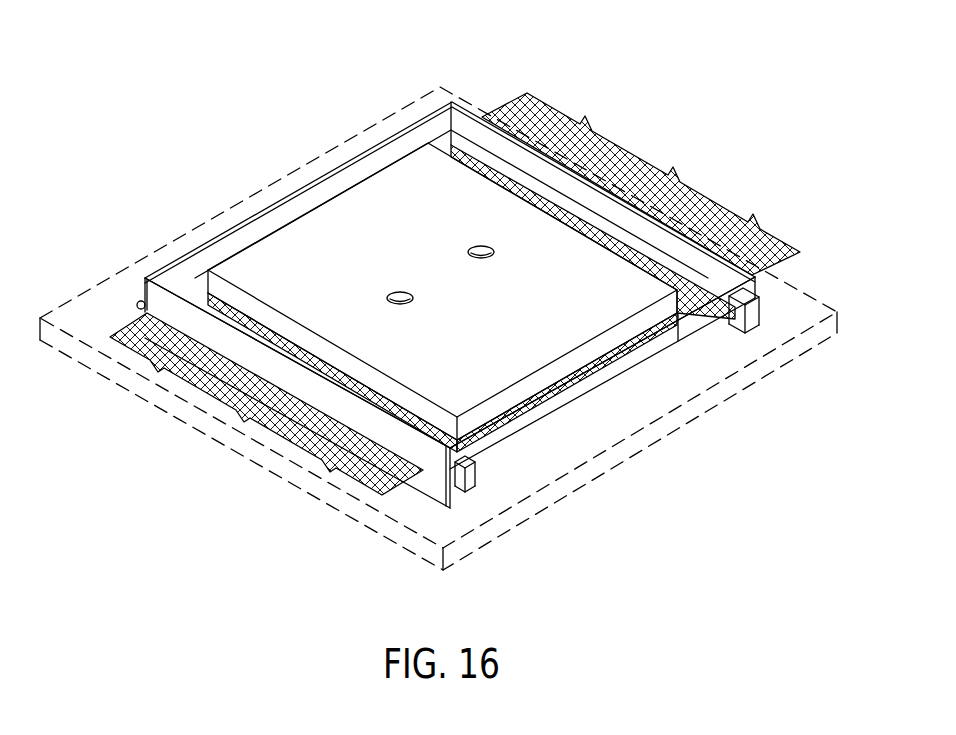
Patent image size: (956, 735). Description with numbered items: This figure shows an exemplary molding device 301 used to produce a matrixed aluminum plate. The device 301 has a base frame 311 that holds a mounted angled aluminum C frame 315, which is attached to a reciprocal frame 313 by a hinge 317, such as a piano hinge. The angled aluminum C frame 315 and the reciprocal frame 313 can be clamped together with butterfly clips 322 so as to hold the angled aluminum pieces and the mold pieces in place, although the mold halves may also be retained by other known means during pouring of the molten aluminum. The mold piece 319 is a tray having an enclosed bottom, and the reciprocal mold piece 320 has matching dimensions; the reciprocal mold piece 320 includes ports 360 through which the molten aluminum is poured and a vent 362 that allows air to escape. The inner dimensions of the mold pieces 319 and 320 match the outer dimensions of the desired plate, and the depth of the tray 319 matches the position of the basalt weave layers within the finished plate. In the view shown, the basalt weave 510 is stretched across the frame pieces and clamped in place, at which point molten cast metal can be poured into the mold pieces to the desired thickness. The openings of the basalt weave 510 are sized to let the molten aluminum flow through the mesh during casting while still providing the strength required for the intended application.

The device 301 is at (258, 172).
The base frame 311 is at (218, 440).
The reciprocal frame 313 is at (247, 355).
The angled aluminum 'C' frame 315 is at (430, 490).
The hinge 317 is at (140, 300).
The mold piece 319 is at (632, 358).
The reciprocal mold piece 320 is at (573, 252).
The butterfly clips 322 is at (757, 318).
The ports 360 is at (408, 302).
The vent 362 is at (495, 257).
The basalt weave 510 is at (517, 115).